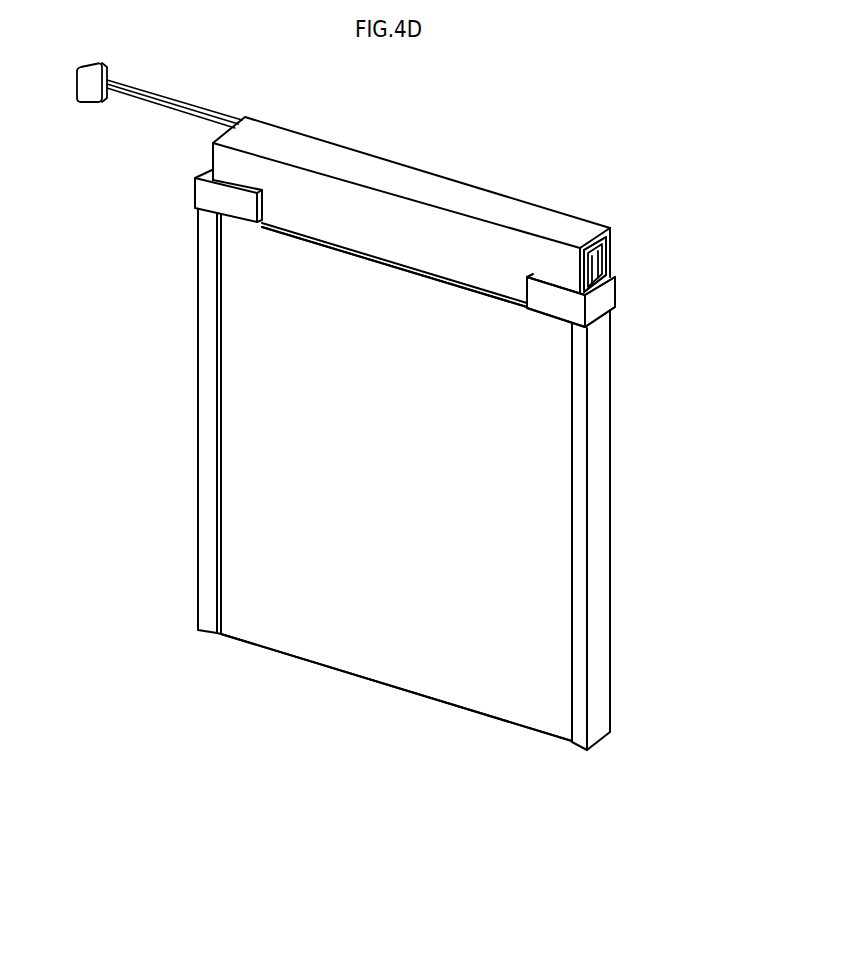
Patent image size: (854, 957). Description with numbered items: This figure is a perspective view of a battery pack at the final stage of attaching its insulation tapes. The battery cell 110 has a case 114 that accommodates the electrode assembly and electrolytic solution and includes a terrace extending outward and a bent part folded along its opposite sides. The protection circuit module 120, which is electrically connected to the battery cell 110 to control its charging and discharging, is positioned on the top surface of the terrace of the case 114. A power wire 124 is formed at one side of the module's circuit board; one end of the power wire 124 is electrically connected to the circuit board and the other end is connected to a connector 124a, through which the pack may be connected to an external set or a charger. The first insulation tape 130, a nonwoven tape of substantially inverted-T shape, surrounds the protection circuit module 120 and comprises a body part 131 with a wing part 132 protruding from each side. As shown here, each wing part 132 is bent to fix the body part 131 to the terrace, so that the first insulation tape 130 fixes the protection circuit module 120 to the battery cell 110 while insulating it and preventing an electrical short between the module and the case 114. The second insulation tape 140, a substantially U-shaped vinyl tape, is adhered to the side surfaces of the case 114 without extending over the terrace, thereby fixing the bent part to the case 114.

The battery cell 110 is at (464, 714).
The case 114 is at (372, 665).
The protection circuit module 120 is at (581, 247).
The power wire 124 is at (155, 108).
The connector 124a is at (87, 93).
The first insulation tape 130 is at (700, 215).
The body part 131 is at (588, 224).
The wing part 132 is at (612, 295).
The second insulation tape 140 is at (202, 419).